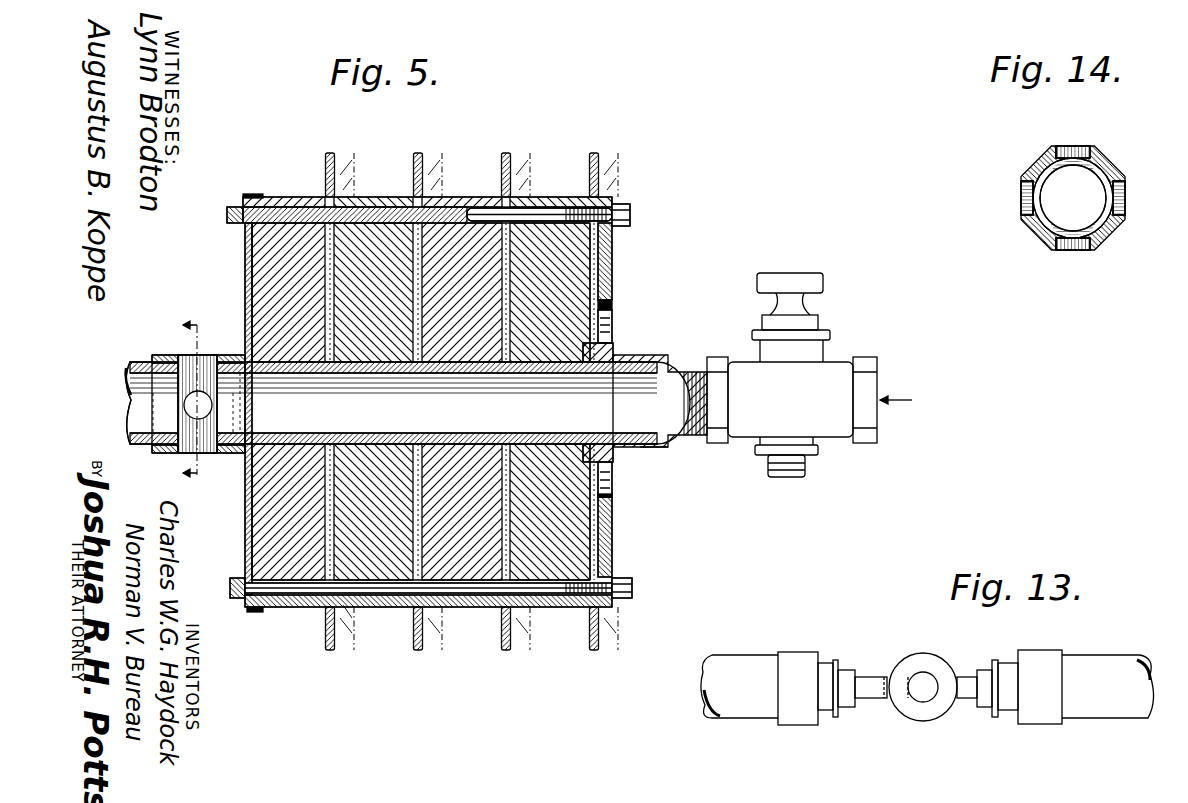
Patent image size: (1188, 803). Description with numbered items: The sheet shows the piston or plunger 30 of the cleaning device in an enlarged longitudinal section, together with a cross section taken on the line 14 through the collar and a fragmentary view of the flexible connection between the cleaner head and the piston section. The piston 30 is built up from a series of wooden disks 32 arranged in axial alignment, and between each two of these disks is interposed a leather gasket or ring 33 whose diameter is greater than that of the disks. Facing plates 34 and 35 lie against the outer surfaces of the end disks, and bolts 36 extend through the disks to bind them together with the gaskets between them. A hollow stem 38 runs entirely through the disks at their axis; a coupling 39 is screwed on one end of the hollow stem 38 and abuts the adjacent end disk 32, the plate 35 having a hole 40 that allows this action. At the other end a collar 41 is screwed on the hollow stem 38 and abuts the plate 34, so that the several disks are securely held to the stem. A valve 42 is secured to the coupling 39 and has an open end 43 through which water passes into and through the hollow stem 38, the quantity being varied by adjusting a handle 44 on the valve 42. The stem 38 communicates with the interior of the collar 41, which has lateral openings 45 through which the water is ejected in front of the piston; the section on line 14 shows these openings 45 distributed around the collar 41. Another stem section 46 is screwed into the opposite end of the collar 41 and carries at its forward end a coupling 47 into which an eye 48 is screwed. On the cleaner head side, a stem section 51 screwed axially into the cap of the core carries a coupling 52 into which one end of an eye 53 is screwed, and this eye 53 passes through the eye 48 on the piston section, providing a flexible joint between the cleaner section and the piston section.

In FIG. 5, the section line 14— 14 is at (176, 399).
In FIG. 5, the piston or plunger 30 is at (427, 367).
In FIG. 5, the wooden disks 32 is at (298, 205).
In FIG. 5, the leather gasket or ring 33 is at (325, 156).
In FIG. 5, the facing plate 34 is at (245, 266).
In FIG. 5, the facing plate 35 is at (612, 276).
In FIG. 5, the bolts 36 is at (478, 215).
In FIG. 5, the hollow stem 38 is at (655, 338).
In FIG. 5, the coupling 39 is at (658, 447).
In FIG. 5, the hole 40 is at (612, 312).
In FIG. 5, the collar 41 is at (238, 357).
In FIG. 14, the collar 41 is at (1045, 156).
In FIG. 5, the valve 42 is at (745, 468).
In FIG. 5, the open end 43 is at (896, 400).
In FIG. 5, the handle 44 is at (790, 273).
In FIG. 5, the lateral openings 45 is at (212, 470).
In FIG. 14, the lateral openings 45 is at (1075, 146).
In FIG. 5, the stem section 46 is at (130, 364).
In FIG. 14, the stem section 46 is at (1103, 172).
In FIG. 13, the stem section 46 is at (1096, 668).
In FIG. 13, the coupling 47 is at (1026, 660).
In FIG. 13, the eye 48 is at (934, 668).
In FIG. 13, the stem section 51 is at (750, 665).
In FIG. 13, the coupling 52 is at (832, 660).
In FIG. 13, the eye 53 is at (872, 685).